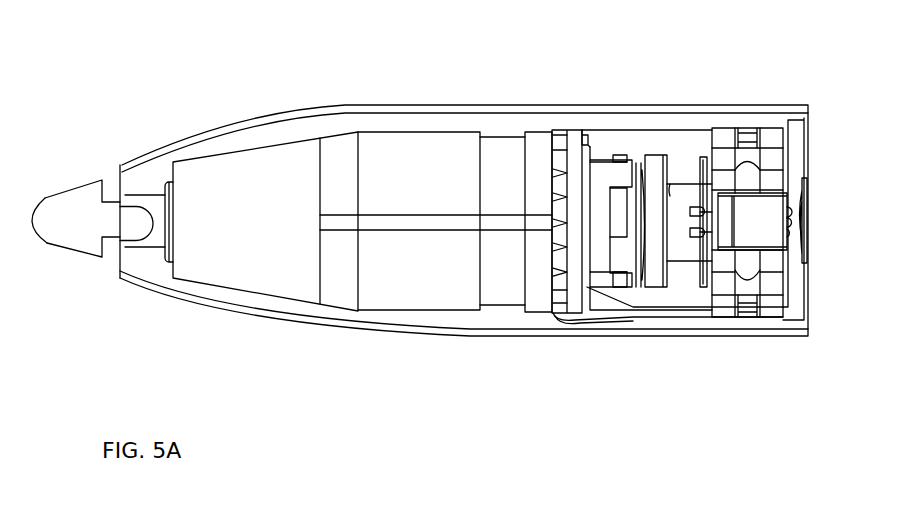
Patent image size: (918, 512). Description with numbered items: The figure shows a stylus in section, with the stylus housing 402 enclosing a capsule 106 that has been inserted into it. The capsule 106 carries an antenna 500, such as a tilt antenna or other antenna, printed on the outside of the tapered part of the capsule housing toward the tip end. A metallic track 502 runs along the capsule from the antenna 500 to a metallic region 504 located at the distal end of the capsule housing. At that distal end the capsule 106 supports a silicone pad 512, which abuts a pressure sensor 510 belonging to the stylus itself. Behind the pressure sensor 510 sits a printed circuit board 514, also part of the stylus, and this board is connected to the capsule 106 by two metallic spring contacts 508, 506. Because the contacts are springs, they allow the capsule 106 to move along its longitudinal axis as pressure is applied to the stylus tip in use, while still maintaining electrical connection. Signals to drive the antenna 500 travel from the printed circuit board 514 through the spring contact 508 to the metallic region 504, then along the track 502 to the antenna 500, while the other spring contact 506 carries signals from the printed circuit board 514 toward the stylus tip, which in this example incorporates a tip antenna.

The stylus housing 402 is at (340, 108).
The antenna 500 is at (191, 224).
The capsule 106 is at (401, 292).
The metallic track 502 is at (442, 223).
The metallic region 504 is at (543, 176).
The spring contact 506 is at (622, 318).
The spring contact 508 is at (607, 132).
The pressure sensor 510 is at (648, 173).
The silicone pad 512 is at (633, 222).
The printed circuit board 514 is at (799, 309).